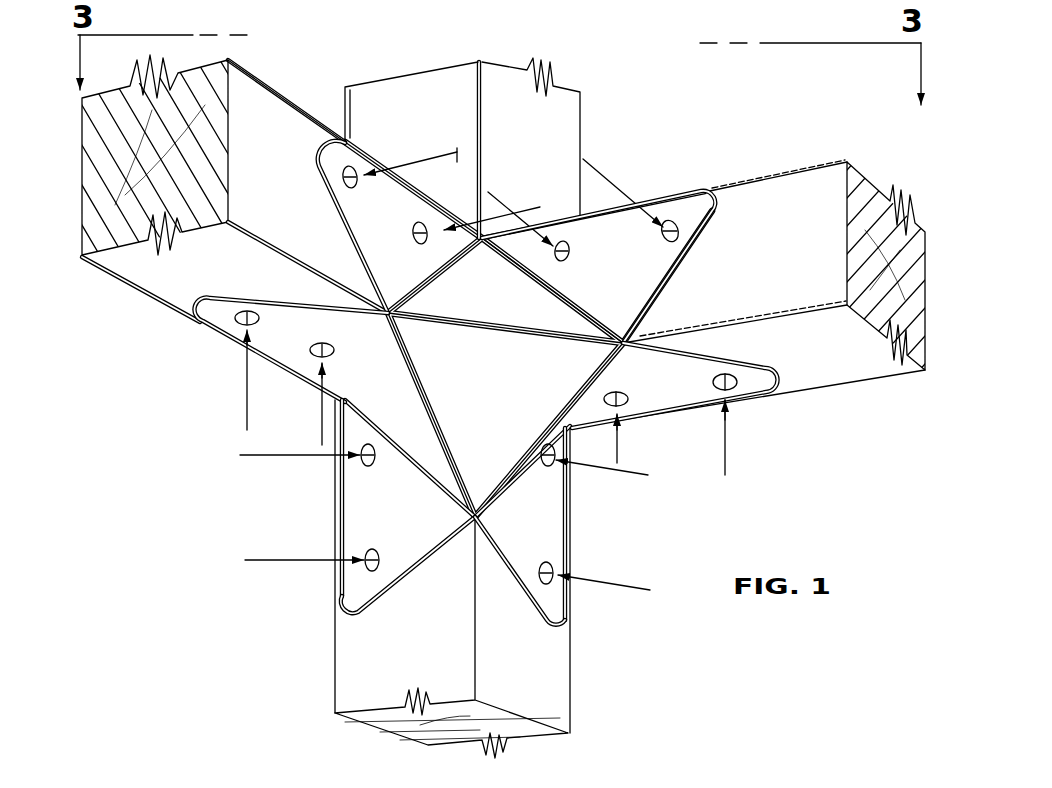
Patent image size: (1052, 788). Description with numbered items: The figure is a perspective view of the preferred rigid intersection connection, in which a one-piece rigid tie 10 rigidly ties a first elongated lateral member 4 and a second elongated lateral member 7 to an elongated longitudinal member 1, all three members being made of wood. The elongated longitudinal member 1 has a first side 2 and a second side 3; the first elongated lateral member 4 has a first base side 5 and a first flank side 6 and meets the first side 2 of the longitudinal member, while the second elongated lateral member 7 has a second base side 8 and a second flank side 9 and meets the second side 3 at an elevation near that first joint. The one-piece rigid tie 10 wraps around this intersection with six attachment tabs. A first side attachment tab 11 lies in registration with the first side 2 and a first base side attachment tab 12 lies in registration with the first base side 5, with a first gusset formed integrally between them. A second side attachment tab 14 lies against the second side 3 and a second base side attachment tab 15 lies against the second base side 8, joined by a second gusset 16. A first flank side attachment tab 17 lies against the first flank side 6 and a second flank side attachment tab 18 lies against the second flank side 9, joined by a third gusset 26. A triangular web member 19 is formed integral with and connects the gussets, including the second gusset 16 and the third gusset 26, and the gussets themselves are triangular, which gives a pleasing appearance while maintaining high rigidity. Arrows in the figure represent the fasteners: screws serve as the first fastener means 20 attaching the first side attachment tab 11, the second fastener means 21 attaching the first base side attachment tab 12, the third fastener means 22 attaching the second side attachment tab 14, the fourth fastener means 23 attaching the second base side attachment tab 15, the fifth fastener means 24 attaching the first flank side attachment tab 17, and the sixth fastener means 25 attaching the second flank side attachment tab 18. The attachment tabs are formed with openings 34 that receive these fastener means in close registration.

The elongated longitudinal member 1 is at (570, 688).
The first side 2 is at (511, 672).
The second side 3 is at (396, 642).
The first elongated lateral member 4 is at (801, 169).
The first base side 5 is at (823, 362).
The first flank side 6 is at (797, 274).
The second elongated lateral member 7 is at (271, 86).
The second base side 8 is at (195, 270).
The second flank side 9 is at (256, 169).
The one-piece rigid tie 10 is at (706, 190).
The first side attachment tab 11 is at (566, 640).
The first base side attachment tab 12 is at (764, 390).
The second side attachment tab 14 is at (347, 602).
The second base side attachment tab 15 is at (200, 310).
The second gusset 16 is at (345, 448).
The first flank side attachment tab 17 is at (718, 221).
The second flank side attachment tab 18 is at (322, 152).
The triangular web member 19 is at (487, 447).
The first fastener means 20 is at (637, 475).
The second fastener means 21 is at (725, 436).
The third fastener means 22 is at (262, 560).
The fourth fastener means 23 is at (322, 420).
The fifth fastener means 24 is at (598, 176).
The sixth fastener means 25 is at (490, 214).
The third gusset 26 is at (521, 300).
The openings 34 is at (413, 236).